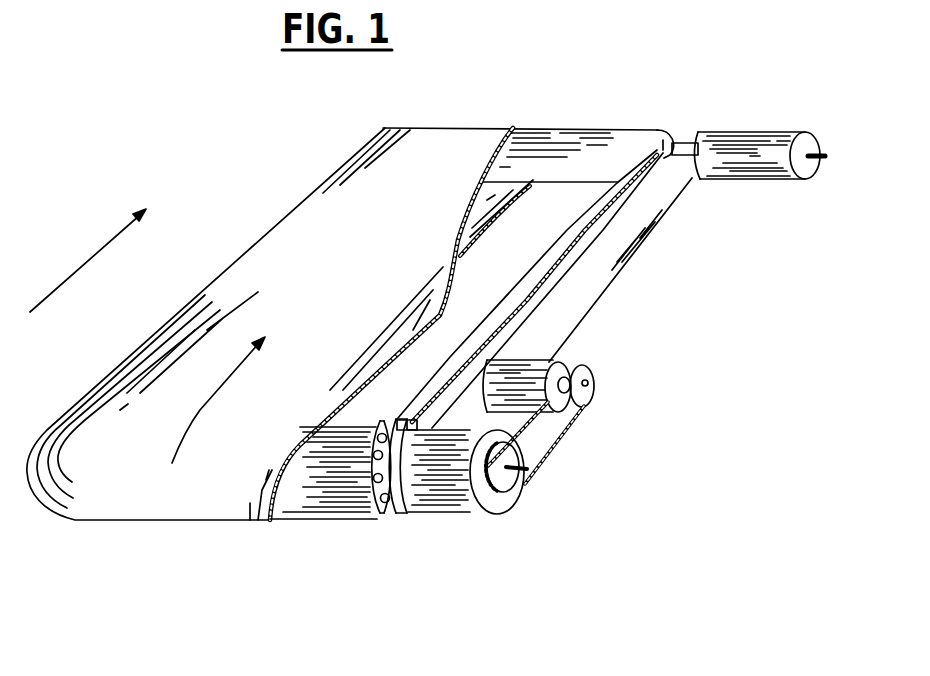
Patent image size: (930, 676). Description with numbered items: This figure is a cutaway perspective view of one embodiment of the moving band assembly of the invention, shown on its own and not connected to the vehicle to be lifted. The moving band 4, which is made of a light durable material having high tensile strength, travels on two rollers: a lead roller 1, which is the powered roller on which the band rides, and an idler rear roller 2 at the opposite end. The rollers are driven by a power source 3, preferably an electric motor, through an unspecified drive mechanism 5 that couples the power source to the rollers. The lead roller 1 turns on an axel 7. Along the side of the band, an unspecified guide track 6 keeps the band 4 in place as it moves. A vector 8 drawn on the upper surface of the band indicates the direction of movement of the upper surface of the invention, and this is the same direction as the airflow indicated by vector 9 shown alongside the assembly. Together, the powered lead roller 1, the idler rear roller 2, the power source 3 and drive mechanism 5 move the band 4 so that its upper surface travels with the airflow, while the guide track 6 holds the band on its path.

The lead roller 1 is at (458, 495).
The idler rear roller 2 is at (597, 130).
The power source 3 is at (530, 382).
The moving band 4 is at (250, 267).
The drive mechanism 5 is at (396, 513).
The guide track 6 is at (547, 268).
The axel 7 is at (522, 486).
The direction of movement vector 8 is at (227, 372).
The airflow vector 9 is at (102, 246).